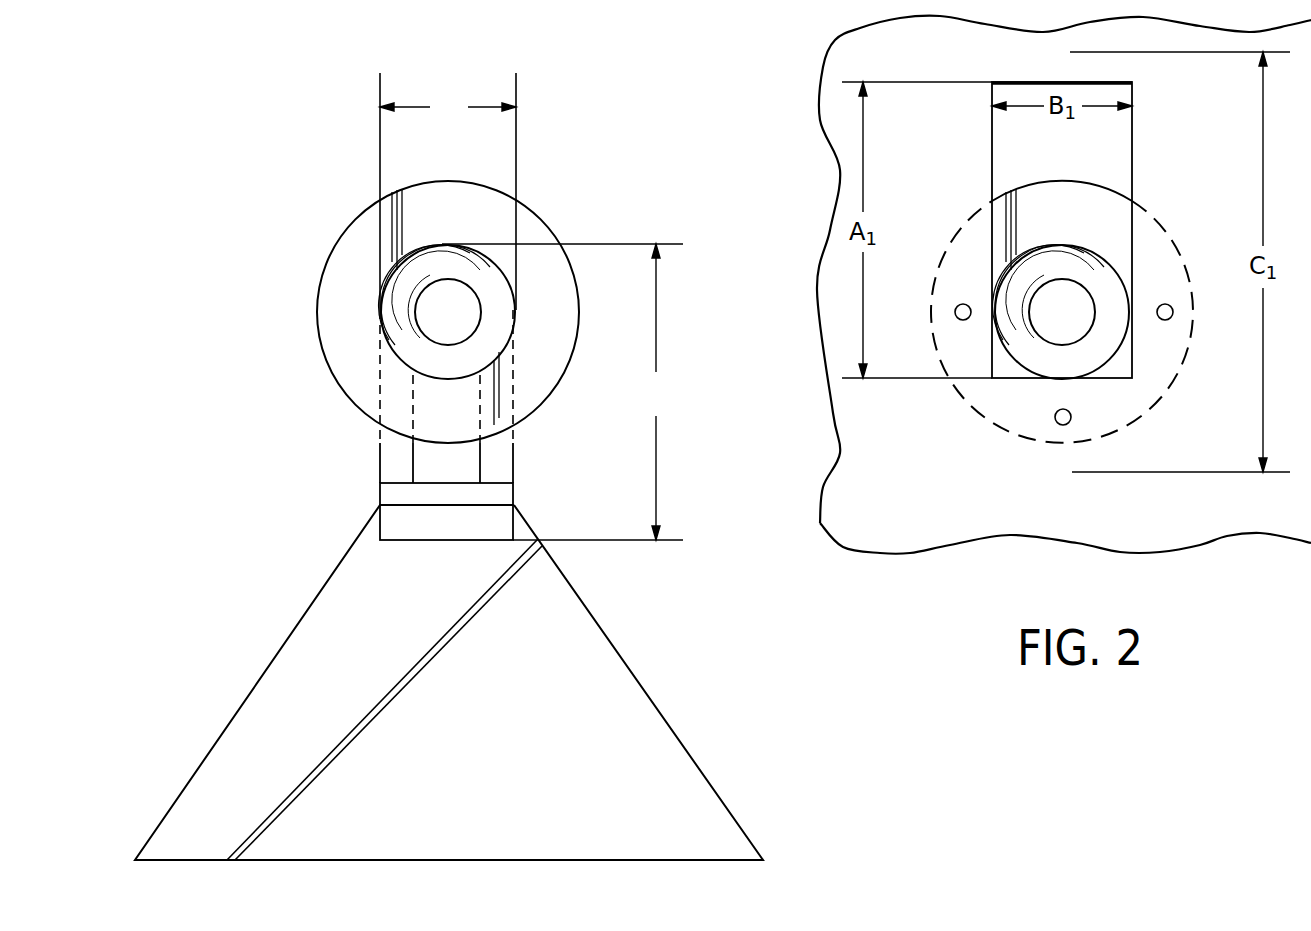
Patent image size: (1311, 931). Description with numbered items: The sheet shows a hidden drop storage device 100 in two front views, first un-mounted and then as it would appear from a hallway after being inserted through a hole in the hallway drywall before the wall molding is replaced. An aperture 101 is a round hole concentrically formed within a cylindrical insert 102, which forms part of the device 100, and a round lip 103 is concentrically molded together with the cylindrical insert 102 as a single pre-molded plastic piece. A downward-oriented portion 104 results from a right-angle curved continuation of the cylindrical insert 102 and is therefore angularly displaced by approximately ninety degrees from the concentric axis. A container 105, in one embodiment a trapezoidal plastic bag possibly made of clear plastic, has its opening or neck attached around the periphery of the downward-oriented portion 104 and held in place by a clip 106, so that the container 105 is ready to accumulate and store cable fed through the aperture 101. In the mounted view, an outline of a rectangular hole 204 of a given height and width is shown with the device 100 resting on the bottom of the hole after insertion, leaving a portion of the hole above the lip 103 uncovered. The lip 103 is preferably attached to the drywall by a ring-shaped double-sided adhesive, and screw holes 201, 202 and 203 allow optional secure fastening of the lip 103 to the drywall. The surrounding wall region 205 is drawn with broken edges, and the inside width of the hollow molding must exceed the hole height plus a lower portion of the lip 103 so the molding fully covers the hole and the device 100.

In FIG. 1, the hidden drop storage device 100 is at (207, 569).
In FIG. 1, the aperture 101 is at (423, 318).
In FIG. 2, the aperture 101 is at (1037, 327).
In FIG. 1, the cylindrical insert 102 is at (432, 244).
In FIG. 2, the cylindrical insert 102 is at (1058, 245).
In FIG. 1, the round lip 103 is at (455, 183).
In FIG. 2, the round lip 103 is at (1063, 180).
In FIG. 1, the downward-oriented portion 104 is at (514, 445).
In FIG. 1, the container 105 is at (605, 635).
In FIG. 1, the clip 106 is at (380, 492).
In FIG. 2, the screw hole 201 is at (1165, 304).
In FIG. 2, the screw hole 202 is at (1055, 418).
In FIG. 2, the screw hole 203 is at (962, 304).
In FIG. 2, the rectangular hole 204 is at (1130, 157).
In FIG. 2, the mounting plate 205 is at (1253, 533).